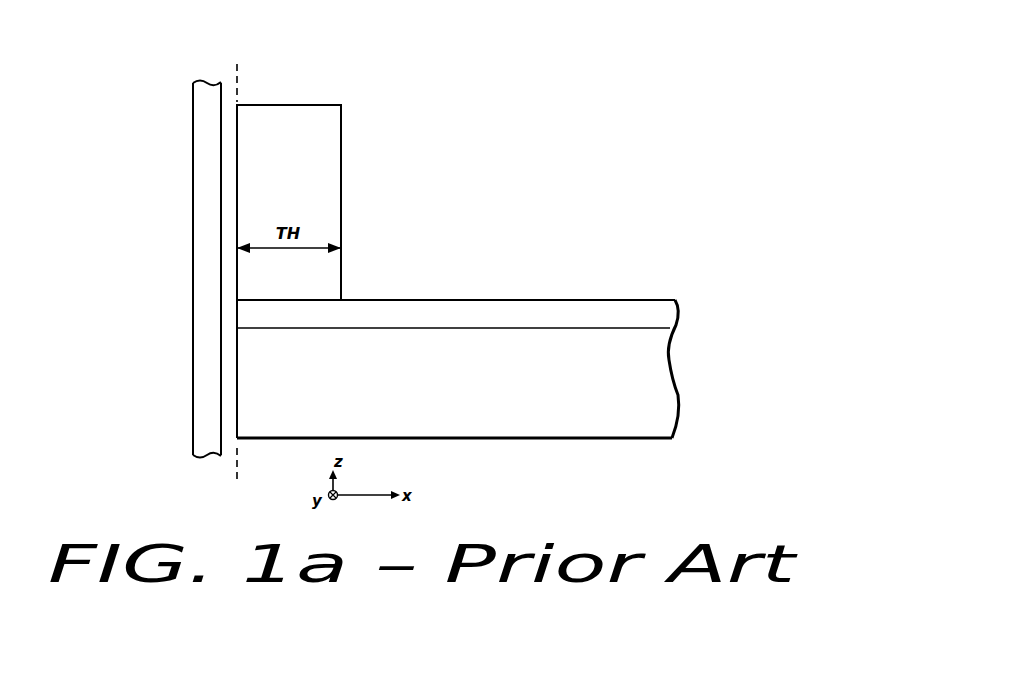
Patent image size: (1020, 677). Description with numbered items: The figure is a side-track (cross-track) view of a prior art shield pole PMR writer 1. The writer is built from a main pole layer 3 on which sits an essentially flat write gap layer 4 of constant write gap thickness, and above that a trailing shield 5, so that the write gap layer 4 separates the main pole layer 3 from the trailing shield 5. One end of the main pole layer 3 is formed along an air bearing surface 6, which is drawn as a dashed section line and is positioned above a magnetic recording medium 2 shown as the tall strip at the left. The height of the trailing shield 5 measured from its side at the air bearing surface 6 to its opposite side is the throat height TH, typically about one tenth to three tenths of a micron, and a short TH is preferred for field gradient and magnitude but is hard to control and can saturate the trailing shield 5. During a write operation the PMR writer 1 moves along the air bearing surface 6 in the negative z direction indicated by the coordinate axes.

The shield pole PMR writer 1 is at (435, 190).
The magnetic recording medium 2 is at (195, 97).
The main pole layer 3 is at (596, 425).
The write gap layer 4 is at (596, 312).
The trailing shield 5 is at (338, 160).
The air bearing surface 6 is at (237, 64).